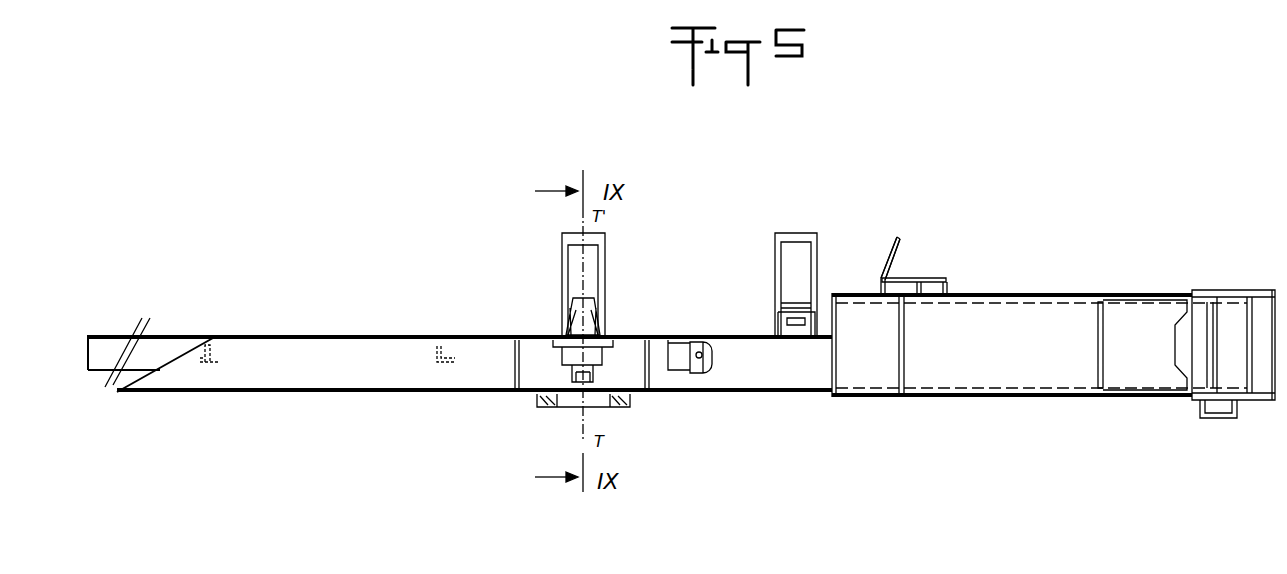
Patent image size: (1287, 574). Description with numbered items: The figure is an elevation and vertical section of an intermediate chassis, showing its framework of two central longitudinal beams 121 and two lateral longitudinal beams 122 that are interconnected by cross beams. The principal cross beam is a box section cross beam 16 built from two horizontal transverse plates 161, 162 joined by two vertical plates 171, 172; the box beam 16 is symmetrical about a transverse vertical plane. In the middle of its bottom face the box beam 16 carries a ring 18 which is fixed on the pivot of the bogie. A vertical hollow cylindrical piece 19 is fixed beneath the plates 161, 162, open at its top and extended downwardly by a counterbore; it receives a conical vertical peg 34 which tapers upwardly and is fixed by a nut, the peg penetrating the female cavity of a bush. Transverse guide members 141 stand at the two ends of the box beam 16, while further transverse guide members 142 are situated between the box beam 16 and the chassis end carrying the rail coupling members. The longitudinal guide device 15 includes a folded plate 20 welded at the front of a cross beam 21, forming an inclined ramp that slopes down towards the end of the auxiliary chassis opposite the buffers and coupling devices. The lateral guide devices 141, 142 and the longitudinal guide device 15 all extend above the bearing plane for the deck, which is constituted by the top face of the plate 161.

The central longitudinal beam 121 is at (330, 370).
The lateral longitudinal beam 122 is at (153, 345).
The transverse guide member 141 is at (560, 233).
The transverse guide member 142 is at (808, 224).
The longitudinal guide device 15 is at (905, 246).
The box section cross beam 16 is at (538, 325).
The horizontal transverse plate 161 is at (633, 335).
The horizontal transverse plate 162 is at (566, 400).
The vertical plate 171 is at (516, 366).
The vertical plate 172 is at (650, 370).
The ring 18 is at (623, 402).
The vertical hollow cylindrical piece 19 is at (573, 352).
The folded plate 20 is at (880, 268).
The cross beam 21 is at (928, 276).
The conical vertical peg 34 is at (590, 308).